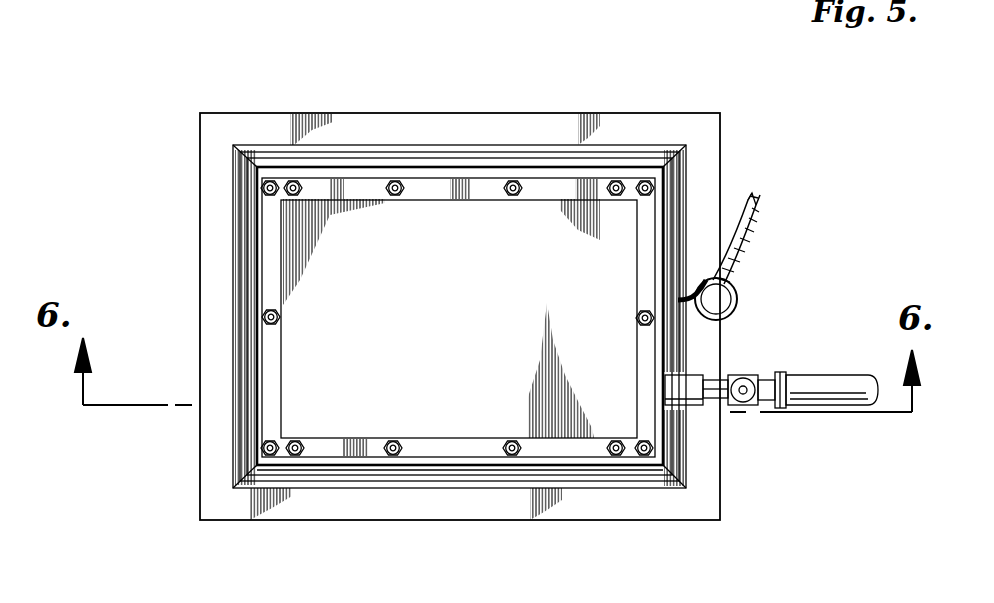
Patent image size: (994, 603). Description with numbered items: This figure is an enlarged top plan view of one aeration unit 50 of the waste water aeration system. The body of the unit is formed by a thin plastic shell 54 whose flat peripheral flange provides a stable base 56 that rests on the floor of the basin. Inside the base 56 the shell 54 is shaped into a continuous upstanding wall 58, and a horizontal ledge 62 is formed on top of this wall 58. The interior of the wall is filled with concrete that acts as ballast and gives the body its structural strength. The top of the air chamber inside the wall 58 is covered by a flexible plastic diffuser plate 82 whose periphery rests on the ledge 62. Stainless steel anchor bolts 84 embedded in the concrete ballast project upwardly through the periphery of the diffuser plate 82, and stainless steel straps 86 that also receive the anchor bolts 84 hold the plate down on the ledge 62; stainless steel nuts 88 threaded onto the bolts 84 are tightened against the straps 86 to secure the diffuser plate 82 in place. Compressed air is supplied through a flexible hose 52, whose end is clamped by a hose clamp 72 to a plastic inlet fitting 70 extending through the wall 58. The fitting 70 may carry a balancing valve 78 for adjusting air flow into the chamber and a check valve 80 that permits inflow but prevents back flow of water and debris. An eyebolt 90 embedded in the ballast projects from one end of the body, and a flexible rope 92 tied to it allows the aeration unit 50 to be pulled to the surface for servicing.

The aeration unit 50 is at (742, 542).
The flexible hose 52 is at (827, 377).
The thin plastic shell 54 is at (728, 484).
The base 56 is at (522, 513).
The upstanding wall 58 is at (410, 160).
The horizontal ledge 62 is at (346, 172).
The inlet fitting 70 is at (724, 375).
The hose clamp 72 is at (778, 373).
The balancing valve 78 is at (745, 398).
The check valve 80 is at (690, 373).
The diffuser plate 82 is at (483, 327).
The anchor bolts 84 is at (395, 197).
The straps 86 is at (478, 194).
The nuts 88 is at (292, 180).
The eyebolt 90 is at (737, 292).
The flexible rope 92 is at (750, 217).